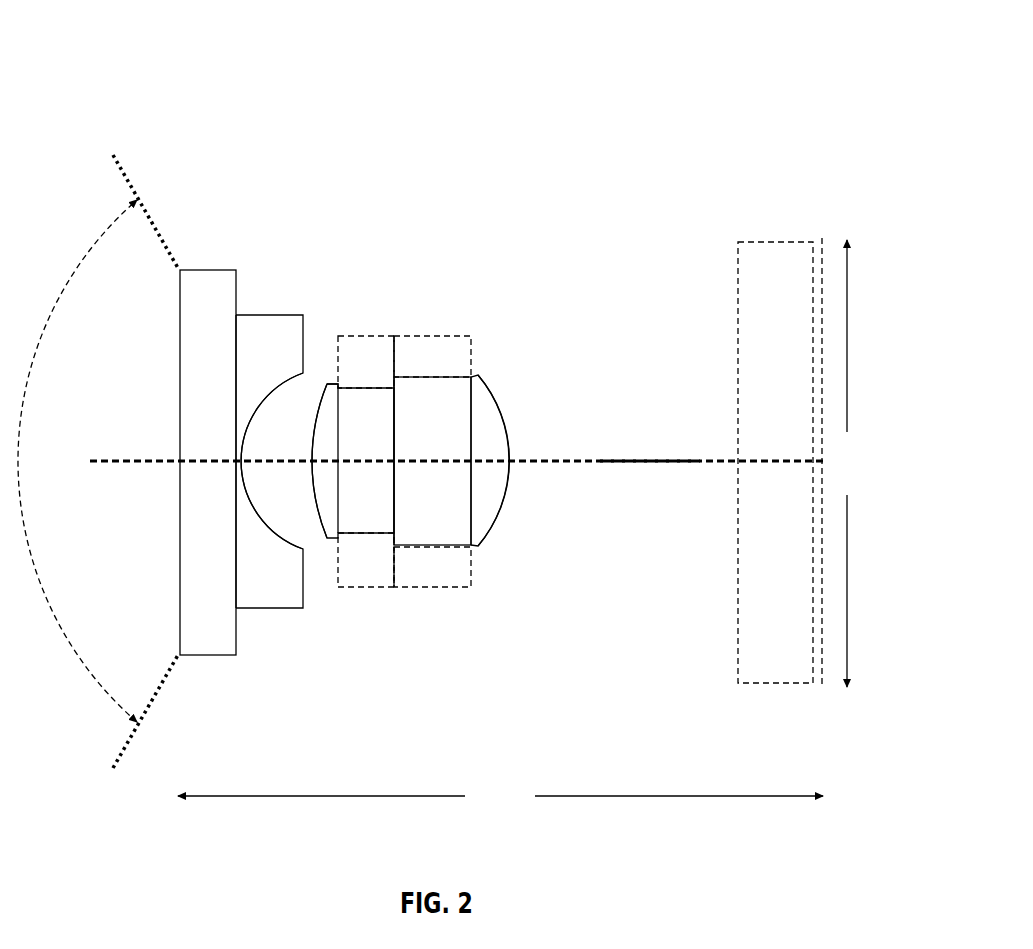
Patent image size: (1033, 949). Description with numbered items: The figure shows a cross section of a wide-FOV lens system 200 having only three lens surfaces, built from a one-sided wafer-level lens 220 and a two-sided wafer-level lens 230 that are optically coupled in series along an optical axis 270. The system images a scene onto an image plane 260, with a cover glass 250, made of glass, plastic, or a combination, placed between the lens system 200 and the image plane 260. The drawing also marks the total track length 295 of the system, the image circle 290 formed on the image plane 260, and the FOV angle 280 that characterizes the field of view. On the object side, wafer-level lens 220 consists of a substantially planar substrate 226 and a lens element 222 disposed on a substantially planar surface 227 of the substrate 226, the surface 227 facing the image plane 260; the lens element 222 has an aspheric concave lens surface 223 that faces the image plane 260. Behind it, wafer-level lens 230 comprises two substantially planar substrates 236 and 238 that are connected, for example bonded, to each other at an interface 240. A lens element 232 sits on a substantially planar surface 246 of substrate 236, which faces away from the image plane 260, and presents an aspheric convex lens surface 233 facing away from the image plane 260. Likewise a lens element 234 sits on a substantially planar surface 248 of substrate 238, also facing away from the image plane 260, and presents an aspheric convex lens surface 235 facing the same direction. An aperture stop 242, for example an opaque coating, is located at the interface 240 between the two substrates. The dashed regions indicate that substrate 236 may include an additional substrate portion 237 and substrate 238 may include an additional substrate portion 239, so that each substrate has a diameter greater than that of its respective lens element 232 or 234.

The wide-FOV lens system 200 is at (143, 92).
The one-sided wafer-level lens 220 is at (233, 235).
The lens element 222 is at (269, 461).
The aspheric concave lens surface 223 is at (275, 529).
The substrate 226 is at (208, 462).
The substantially planar surface 227 is at (239, 590).
The two-sided wafer-level lens 230 is at (437, 255).
The lens element 232 is at (328, 383).
The aspheric convex lens surface 233 is at (318, 517).
The lens element 234 is at (492, 393).
The aspheric convex lens surface 235 is at (499, 524).
The substrate 236 is at (353, 461).
The additional substrate portion 237 is at (366, 461).
The substrate 238 is at (451, 460).
The additional substrate portion 239 is at (432, 461).
The interface 240 is at (398, 481).
The aperture stop 242 is at (397, 363).
The substantially planar surface 246 is at (336, 445).
The substantially planar surface 248 is at (474, 478).
The cover glass 250 is at (775, 462).
The image plane 260 is at (823, 250).
The optical axis 270 is at (610, 463).
The FOV angle 280 is at (47, 333).
The image circle 290 is at (847, 463).
The total track length 295 is at (500, 796).